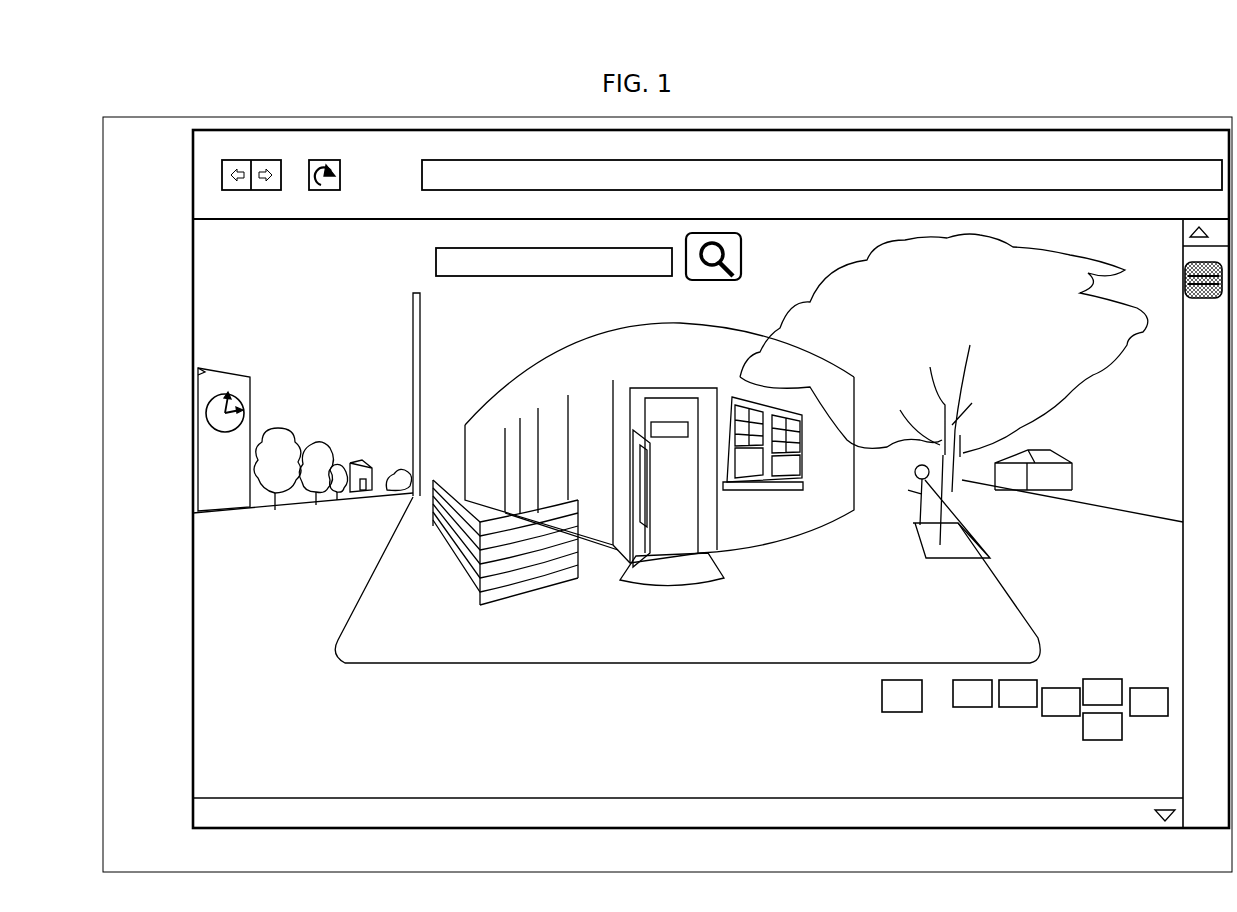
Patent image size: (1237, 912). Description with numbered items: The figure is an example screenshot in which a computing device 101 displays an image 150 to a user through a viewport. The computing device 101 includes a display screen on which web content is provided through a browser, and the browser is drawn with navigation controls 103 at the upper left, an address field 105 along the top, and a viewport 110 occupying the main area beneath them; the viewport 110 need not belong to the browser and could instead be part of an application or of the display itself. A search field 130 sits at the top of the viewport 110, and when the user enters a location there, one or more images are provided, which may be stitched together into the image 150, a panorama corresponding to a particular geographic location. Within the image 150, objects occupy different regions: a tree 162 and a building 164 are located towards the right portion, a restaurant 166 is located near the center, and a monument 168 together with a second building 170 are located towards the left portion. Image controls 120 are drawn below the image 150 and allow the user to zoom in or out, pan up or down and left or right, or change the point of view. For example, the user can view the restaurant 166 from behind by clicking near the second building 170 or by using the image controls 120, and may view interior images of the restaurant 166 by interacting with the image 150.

The computing device 101 is at (102, 260).
The navigation controls 103 is at (337, 160).
The address field 105 is at (515, 160).
The viewport 110 is at (192, 563).
The image controls 120 is at (1170, 735).
The search field 130 is at (318, 238).
The image 150 is at (240, 637).
The tree 162 is at (1112, 370).
The building 164 is at (1062, 456).
The restaurant 166 is at (540, 365).
The monument 168 is at (216, 370).
The second building 170 is at (363, 462).